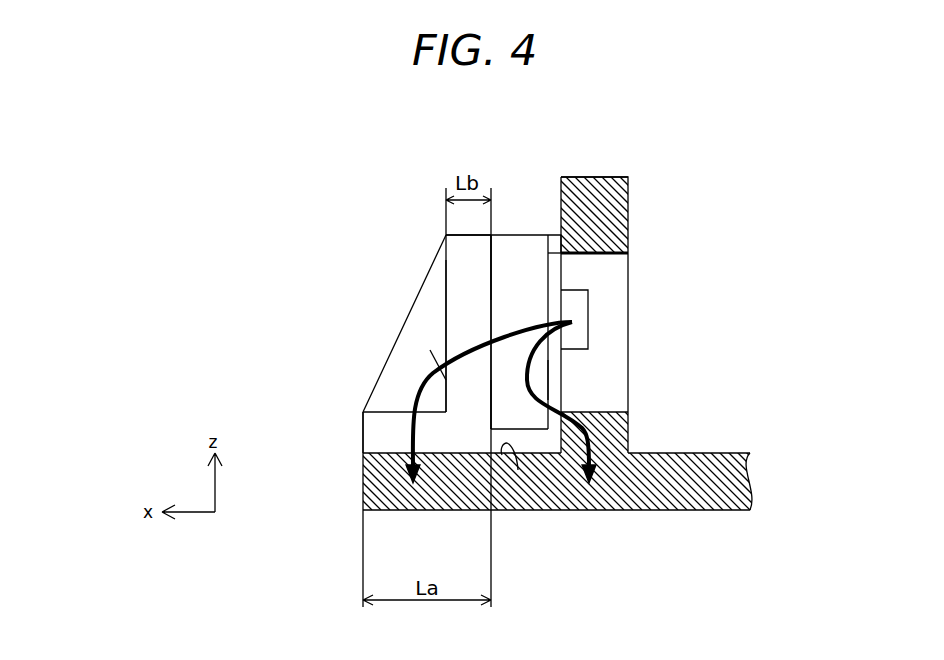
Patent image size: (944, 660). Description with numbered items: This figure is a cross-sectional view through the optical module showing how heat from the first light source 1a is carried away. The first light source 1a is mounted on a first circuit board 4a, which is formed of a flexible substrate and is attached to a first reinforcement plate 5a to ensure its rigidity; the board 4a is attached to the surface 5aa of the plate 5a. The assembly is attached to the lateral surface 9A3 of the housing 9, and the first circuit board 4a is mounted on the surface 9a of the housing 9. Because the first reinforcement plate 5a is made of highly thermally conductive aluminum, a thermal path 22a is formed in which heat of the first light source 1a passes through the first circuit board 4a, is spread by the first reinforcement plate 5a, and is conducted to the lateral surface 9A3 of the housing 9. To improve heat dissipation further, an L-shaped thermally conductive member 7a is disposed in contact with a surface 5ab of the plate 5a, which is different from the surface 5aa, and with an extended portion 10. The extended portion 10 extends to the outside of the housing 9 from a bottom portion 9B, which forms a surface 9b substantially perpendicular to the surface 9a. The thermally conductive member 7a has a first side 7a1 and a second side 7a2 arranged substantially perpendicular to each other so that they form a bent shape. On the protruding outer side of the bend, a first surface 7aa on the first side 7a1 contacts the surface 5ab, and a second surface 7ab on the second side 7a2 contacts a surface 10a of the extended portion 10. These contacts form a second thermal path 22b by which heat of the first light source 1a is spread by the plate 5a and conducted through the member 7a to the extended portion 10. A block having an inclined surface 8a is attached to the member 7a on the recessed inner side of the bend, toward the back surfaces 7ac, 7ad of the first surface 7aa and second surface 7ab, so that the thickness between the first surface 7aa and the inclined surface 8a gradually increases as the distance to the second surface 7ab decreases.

The thermally conductive member 7a is at (463, 255).
The first side 7a1 is at (460, 315).
The back surface 7ac is at (443, 337).
The back surface 7ad is at (381, 416).
The second side 7a2 is at (380, 435).
The second surface 7ab is at (365, 462).
The first surface 7aa is at (492, 387).
The inclined surface 8a is at (433, 287).
The second thermal path 22b is at (417, 380).
The first reinforcement plate 5a is at (520, 243).
The surface 5ab is at (490, 285).
The surface 5aa is at (547, 282).
The first circuit board 4a is at (553, 243).
The thermal path 22a is at (531, 372).
The housing 9 is at (607, 177).
The lateral surface 9A3 is at (605, 222).
The first light source 1a is at (582, 318).
The surface 9a is at (557, 447).
The surface 9b is at (702, 452).
The bottom portion 9B is at (692, 511).
The extended portion 10 is at (410, 511).
The surface 10a is at (518, 470).